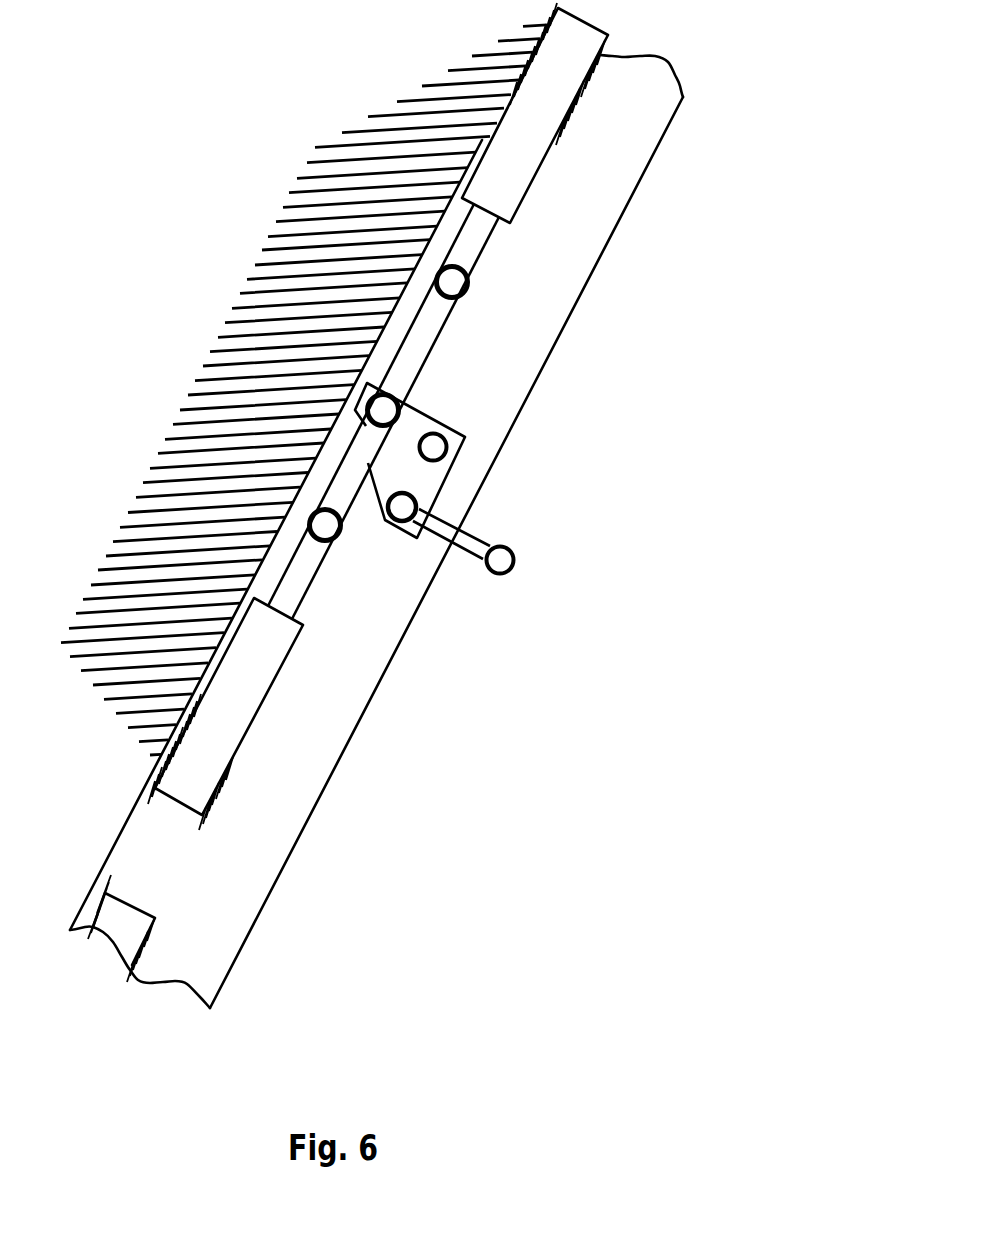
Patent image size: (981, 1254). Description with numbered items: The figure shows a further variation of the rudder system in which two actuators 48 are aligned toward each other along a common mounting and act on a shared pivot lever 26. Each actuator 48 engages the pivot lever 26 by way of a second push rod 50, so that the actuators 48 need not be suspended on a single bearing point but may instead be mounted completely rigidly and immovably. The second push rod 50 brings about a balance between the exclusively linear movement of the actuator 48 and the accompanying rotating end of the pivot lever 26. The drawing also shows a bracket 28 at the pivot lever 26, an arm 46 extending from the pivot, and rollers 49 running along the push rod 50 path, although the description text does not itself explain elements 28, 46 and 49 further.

The pivot lever 26 is at (428, 477).
The bracket 28 is at (433, 440).
The link arm 46 is at (443, 528).
The actuator 48 is at (525, 160).
The roller 49 is at (452, 274).
The second push rod 50 is at (415, 345).